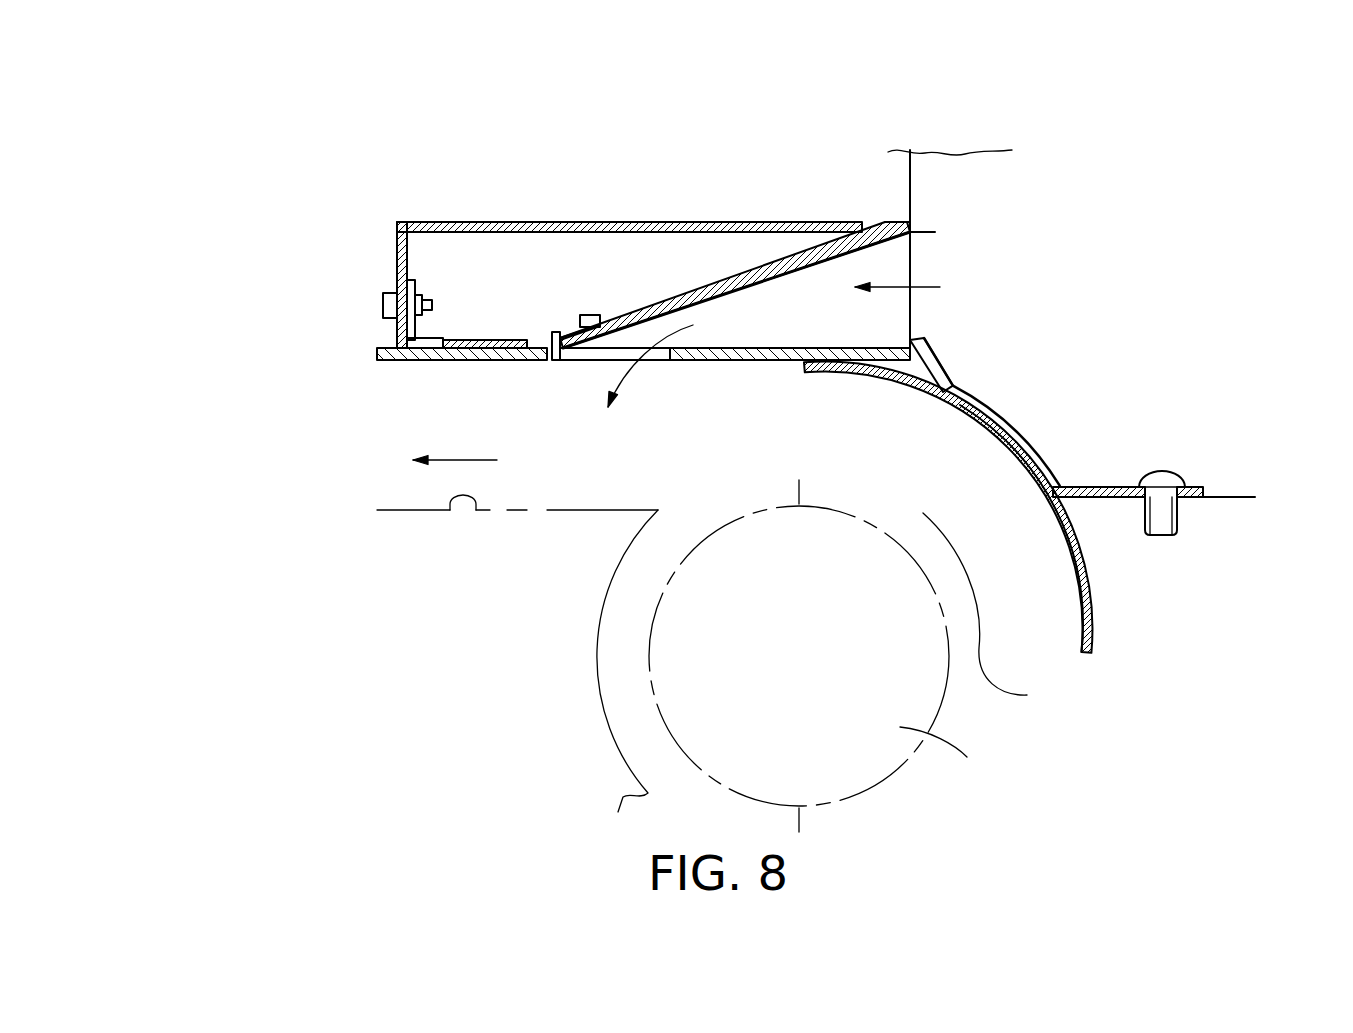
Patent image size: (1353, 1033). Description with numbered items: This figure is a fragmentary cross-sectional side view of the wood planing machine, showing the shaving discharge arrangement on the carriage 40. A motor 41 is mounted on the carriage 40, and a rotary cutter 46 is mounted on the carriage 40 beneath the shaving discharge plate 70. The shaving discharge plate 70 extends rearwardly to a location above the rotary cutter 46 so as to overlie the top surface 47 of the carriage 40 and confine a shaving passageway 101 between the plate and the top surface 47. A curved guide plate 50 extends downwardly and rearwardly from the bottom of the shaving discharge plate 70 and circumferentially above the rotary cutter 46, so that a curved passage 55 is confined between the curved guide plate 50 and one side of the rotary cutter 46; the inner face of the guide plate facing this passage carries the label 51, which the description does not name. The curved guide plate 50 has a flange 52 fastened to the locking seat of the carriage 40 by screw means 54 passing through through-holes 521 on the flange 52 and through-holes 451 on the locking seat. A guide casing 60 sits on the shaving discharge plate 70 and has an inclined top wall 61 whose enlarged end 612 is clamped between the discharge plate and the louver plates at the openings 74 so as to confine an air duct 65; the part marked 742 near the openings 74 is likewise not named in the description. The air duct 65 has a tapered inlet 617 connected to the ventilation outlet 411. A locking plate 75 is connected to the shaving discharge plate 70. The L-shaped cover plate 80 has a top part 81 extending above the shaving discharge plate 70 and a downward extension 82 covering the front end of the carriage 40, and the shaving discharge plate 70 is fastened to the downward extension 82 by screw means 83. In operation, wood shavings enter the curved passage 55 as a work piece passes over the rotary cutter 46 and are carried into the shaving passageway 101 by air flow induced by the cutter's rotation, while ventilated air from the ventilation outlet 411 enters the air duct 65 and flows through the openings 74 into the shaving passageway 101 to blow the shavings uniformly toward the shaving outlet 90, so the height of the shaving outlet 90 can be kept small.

The carriage 40 is at (370, 520).
The motor 41 is at (967, 168).
The ventilation outlet 411 is at (920, 237).
The through-holes on the locking seat 451 is at (1177, 508).
The rotary cutter 46 is at (973, 767).
The top surface 47 is at (477, 507).
The curved guide plate 50 is at (948, 495).
The shield inner surface 51 is at (1053, 540).
The flange 52 is at (1128, 430).
The through-holes on the flange 521 is at (1133, 487).
The screw means 54 is at (1238, 447).
The curved passage 55 is at (1027, 695).
The guide casing 60 is at (735, 226).
The inclined top wall 61 is at (787, 262).
The enlarged end 612 is at (616, 318).
The tapered inlet 617 is at (908, 262).
The air duct 65 is at (867, 312).
The shaving discharge plate 70 is at (541, 524).
The openings 74 is at (553, 332).
The bracket tab 742 is at (590, 315).
The locking plate 75 is at (485, 340).
The cover plate 80 is at (582, 232).
The top part 81 is at (470, 220).
The downward extension 82 is at (397, 242).
The screw means 83 is at (383, 305).
The shaving outlet 90 is at (390, 447).
The shaving passageway 101 is at (587, 455).